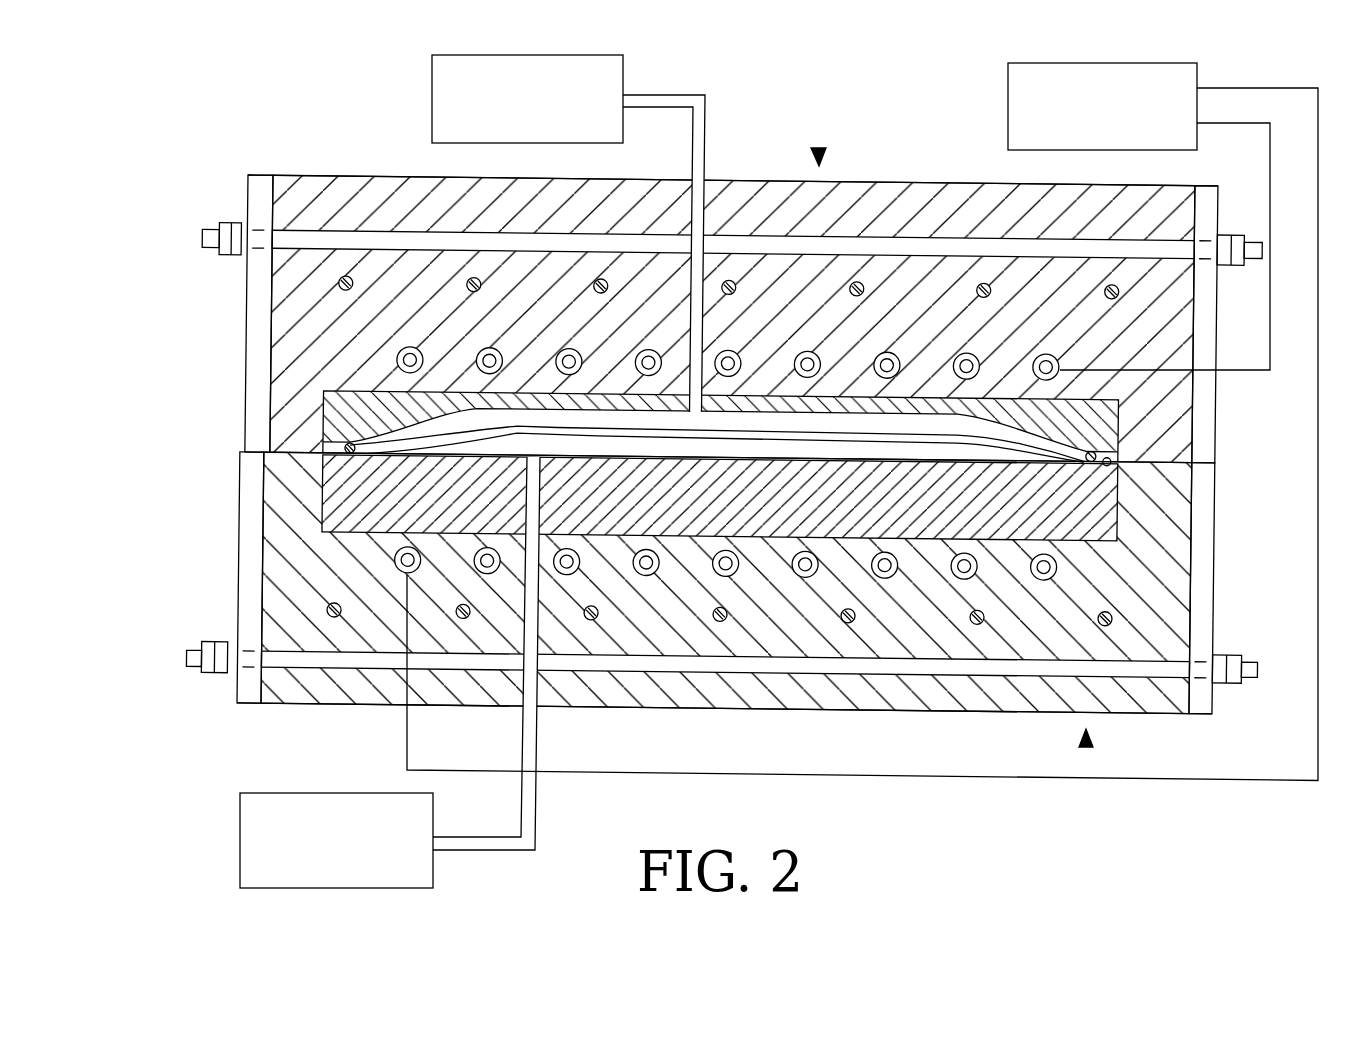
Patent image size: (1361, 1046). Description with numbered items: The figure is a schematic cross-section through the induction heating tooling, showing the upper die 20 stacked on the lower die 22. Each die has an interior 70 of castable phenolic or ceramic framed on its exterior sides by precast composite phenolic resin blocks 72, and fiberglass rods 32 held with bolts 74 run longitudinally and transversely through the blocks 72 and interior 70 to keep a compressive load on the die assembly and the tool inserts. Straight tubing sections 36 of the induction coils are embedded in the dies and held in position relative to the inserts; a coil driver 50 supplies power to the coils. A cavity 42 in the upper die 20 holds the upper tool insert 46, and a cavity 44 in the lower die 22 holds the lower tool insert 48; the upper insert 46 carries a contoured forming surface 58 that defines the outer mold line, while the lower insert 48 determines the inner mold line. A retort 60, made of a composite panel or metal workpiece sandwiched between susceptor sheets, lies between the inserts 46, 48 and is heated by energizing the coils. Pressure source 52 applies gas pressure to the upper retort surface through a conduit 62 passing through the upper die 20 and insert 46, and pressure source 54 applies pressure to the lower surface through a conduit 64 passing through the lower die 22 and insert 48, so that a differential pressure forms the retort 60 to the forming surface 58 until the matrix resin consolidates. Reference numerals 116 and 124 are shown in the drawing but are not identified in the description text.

The upper die 20 is at (820, 148).
The lower die 22 is at (1087, 748).
The fiberglass rods 32 is at (320, 240).
The straight tubing section 36 is at (410, 347).
The cavity 42 is at (1193, 370).
The cavity 44 is at (1120, 497).
The upper tool insert 46 is at (340, 405).
The lower tool insert 48 is at (338, 511).
The coil driver 50 is at (1008, 103).
The pressure source 52 is at (432, 94).
The pressure source 54 is at (240, 838).
The forming surface 58 is at (1047, 440).
The retort 60 is at (1060, 468).
The conduit 62 is at (707, 165).
The conduit 64 is at (537, 810).
The interior 70 is at (356, 177).
The precast composite phenolic resin blocks 72 is at (262, 334).
The bolts 74 is at (227, 258).
The second sheet 116 is at (1114, 442).
The seal 124 is at (345, 447).